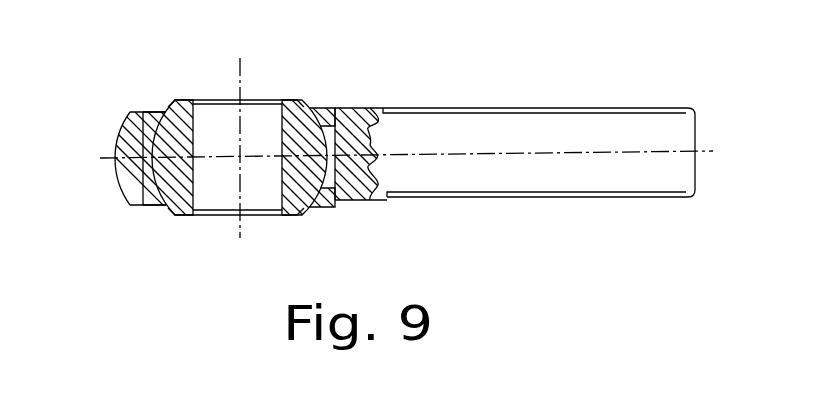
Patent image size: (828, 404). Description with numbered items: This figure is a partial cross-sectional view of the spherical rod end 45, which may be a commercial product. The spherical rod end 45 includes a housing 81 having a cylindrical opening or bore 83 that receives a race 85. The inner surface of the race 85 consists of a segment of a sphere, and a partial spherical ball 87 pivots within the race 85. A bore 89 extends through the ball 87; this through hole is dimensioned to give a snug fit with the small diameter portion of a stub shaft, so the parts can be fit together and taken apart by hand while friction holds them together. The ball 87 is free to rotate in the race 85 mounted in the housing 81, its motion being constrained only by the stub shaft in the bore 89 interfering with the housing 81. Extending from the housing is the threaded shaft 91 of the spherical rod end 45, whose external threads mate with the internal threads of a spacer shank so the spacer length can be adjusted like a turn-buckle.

The housing 81 is at (128, 117).
The partial spherical ball 87 is at (163, 206).
The bore 89 is at (203, 103).
The cylindrical opening or bore 83 is at (309, 106).
The race 85 is at (335, 201).
The spherical rod end 45 is at (356, 104).
The threaded shaft 91 is at (545, 107).